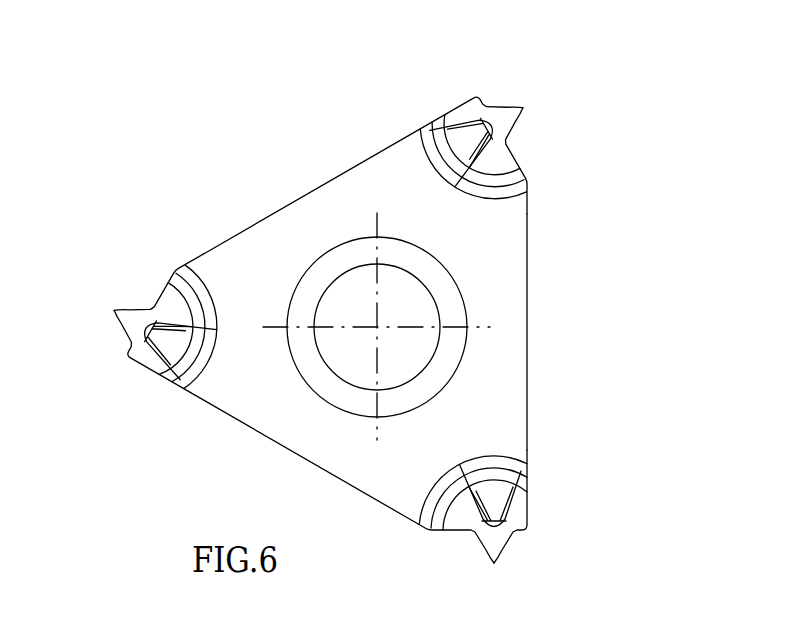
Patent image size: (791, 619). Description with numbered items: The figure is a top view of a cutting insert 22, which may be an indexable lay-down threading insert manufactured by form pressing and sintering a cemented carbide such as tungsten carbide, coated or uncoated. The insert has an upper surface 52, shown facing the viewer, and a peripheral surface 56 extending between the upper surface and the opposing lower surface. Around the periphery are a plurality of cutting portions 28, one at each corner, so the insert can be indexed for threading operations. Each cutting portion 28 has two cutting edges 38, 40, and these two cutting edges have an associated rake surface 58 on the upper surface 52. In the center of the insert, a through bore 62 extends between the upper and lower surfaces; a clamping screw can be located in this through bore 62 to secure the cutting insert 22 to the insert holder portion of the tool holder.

The cutting insert 22 is at (234, 170).
The cutting portion 28 is at (493, 483).
The cutting edge 38 is at (482, 549).
The cutting edge 40 is at (507, 546).
The upper surface 52 is at (390, 196).
The peripheral surface 56 is at (540, 245).
The rake surface 58 is at (494, 546).
The through bore 62 is at (412, 301).